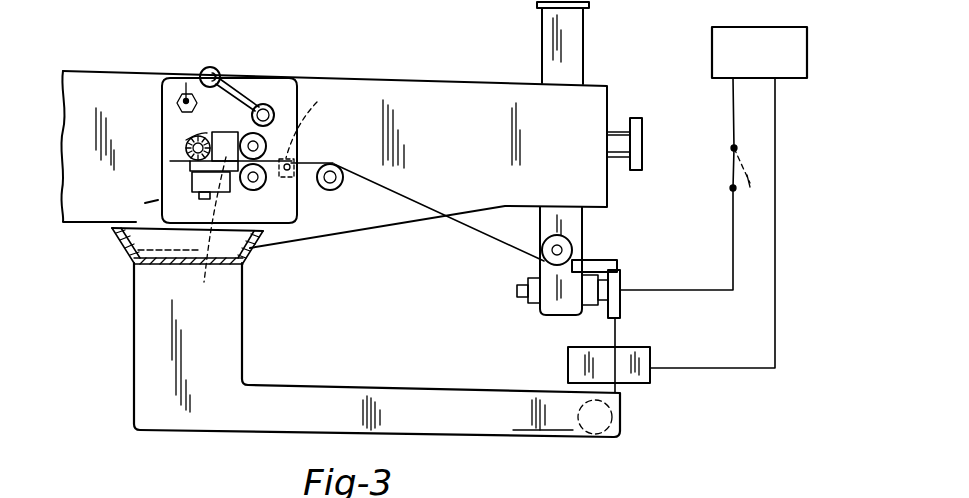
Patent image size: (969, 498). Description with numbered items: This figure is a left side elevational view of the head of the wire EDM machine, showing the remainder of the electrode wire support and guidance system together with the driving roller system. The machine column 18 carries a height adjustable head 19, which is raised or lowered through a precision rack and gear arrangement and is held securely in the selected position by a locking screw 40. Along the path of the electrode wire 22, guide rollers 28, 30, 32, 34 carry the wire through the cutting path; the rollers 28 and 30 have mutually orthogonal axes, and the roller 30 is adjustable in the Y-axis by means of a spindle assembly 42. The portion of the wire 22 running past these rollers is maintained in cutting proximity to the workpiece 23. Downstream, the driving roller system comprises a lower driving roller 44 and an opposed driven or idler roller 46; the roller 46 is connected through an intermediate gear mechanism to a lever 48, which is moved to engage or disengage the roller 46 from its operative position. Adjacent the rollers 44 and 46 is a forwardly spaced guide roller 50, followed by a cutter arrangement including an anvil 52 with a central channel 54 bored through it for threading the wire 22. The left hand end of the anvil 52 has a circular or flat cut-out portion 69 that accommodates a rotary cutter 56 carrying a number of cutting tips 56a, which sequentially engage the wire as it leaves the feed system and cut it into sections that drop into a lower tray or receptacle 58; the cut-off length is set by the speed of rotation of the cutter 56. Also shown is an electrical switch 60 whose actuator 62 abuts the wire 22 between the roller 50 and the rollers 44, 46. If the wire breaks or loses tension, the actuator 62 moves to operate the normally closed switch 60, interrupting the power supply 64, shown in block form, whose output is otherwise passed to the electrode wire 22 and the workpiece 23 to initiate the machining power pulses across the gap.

The machine column 18 is at (430, 78).
The height adjustable head 19 is at (574, 38).
The electrode wire 22 is at (403, 193).
The workpiece 23 is at (651, 378).
The guide roller 28 is at (612, 420).
The guide roller 30 is at (622, 289).
The guide roller 32 is at (612, 258).
The guide roller 34 is at (570, 243).
The locking screw 40 is at (643, 145).
The spindle assembly 42 is at (558, 320).
The lower driving roller 44 is at (280, 202).
The idler roller 46 is at (272, 138).
The lever 48 is at (214, 67).
The guide roller 50 is at (342, 180).
The anvil 52 is at (225, 134).
The central channel 54 is at (377, 297).
The rotary cutter 56 is at (185, 148).
The cutting tips 56a is at (205, 133).
The receptacle 58 is at (132, 260).
The electrical switch 60 is at (293, 160).
The switch actuator 62 is at (312, 112).
The power supply 64 is at (728, 197).
The cut-out portion 69 is at (215, 134).